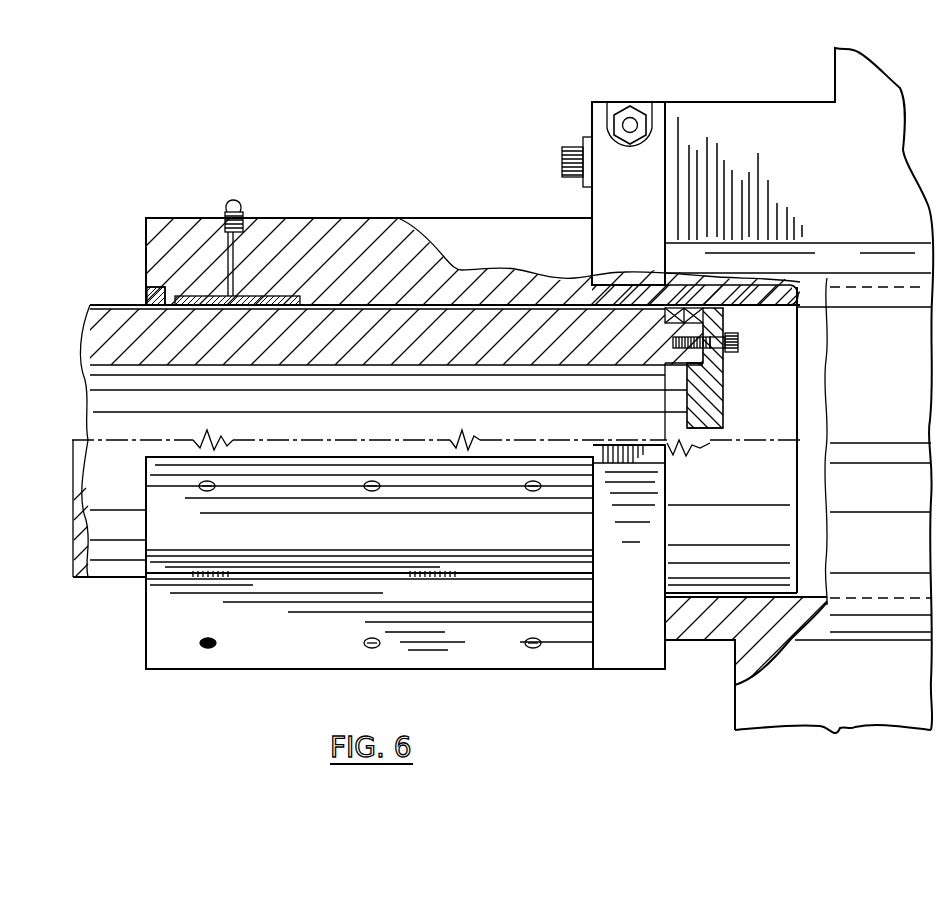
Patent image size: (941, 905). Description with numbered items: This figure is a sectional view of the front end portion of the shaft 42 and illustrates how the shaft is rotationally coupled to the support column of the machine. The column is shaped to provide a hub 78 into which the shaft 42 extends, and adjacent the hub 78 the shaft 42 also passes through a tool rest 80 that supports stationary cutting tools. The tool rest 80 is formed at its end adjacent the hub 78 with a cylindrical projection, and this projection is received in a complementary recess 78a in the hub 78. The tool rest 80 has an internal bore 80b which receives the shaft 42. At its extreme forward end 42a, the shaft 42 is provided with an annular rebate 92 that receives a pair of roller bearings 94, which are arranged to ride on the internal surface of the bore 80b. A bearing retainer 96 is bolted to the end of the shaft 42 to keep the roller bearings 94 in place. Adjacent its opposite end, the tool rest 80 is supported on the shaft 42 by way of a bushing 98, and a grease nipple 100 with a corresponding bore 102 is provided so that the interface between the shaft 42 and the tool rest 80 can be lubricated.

The shaft 42 is at (458, 303).
The extreme forward end 42a is at (797, 373).
The hub 78 is at (700, 618).
The recess 78a is at (747, 389).
The tool rest 80 is at (425, 217).
The internal bore 80b is at (792, 312).
The annular rebate 92 is at (713, 323).
The roller bearings 94 is at (696, 283).
The bearing retainer 96 is at (708, 412).
The bushing 98 is at (270, 300).
The grease nipple 100 is at (233, 199).
The bore 102 is at (228, 256).